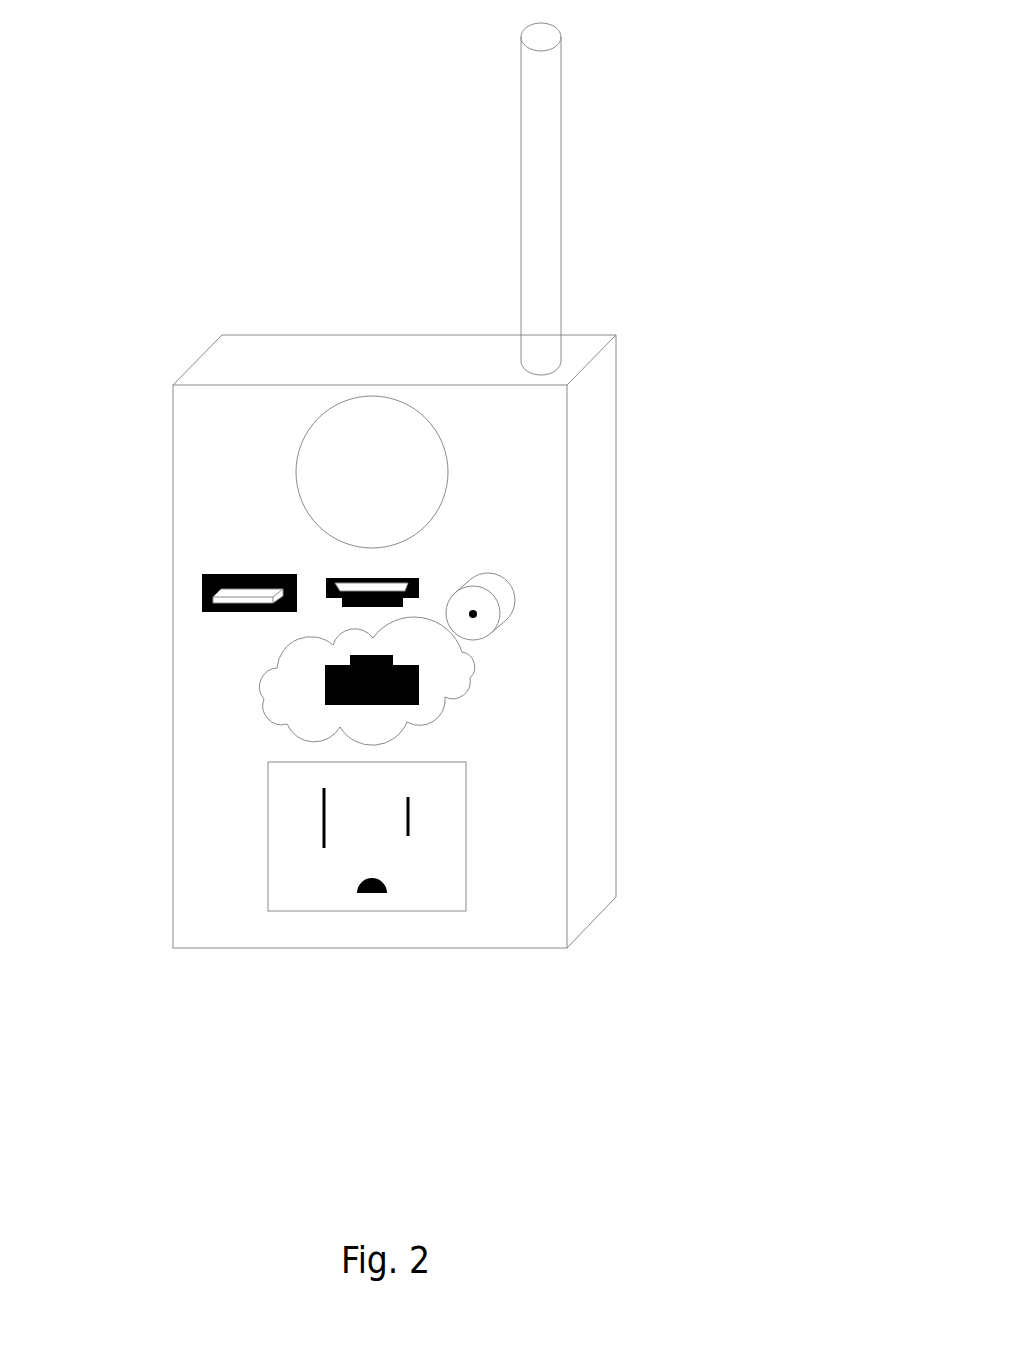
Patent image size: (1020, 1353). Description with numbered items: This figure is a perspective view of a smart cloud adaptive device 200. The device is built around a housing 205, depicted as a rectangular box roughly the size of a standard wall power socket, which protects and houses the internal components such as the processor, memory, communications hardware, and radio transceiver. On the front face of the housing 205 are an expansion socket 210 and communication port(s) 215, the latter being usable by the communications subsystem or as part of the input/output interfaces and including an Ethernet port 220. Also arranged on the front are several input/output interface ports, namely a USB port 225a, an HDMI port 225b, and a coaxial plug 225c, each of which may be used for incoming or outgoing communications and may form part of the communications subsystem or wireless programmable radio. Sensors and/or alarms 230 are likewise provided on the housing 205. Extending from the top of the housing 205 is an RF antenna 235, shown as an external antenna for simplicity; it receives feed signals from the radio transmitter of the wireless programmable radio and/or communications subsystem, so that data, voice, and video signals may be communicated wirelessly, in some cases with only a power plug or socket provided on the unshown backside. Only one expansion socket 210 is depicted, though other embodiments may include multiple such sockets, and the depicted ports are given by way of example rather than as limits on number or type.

The smart cloud adaptive device 200 is at (650, 1108).
The housing 205 is at (602, 883).
The expansion socket 210 is at (466, 845).
The communication port(s) 215 is at (470, 682).
The Ethernet port 220 is at (327, 685).
The USB port 225a is at (202, 592).
The HDMI port 225b is at (355, 578).
The coaxial plug 225c is at (515, 595).
The sensors and/or alarms 230 is at (448, 460).
The RF antenna 235 is at (561, 162).